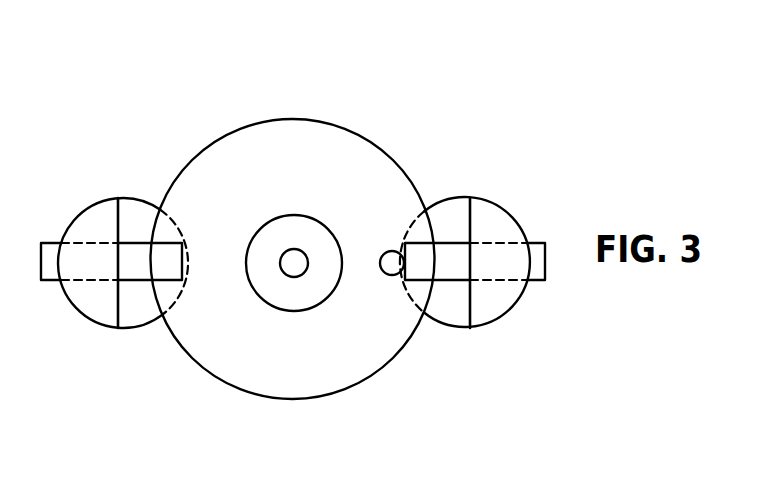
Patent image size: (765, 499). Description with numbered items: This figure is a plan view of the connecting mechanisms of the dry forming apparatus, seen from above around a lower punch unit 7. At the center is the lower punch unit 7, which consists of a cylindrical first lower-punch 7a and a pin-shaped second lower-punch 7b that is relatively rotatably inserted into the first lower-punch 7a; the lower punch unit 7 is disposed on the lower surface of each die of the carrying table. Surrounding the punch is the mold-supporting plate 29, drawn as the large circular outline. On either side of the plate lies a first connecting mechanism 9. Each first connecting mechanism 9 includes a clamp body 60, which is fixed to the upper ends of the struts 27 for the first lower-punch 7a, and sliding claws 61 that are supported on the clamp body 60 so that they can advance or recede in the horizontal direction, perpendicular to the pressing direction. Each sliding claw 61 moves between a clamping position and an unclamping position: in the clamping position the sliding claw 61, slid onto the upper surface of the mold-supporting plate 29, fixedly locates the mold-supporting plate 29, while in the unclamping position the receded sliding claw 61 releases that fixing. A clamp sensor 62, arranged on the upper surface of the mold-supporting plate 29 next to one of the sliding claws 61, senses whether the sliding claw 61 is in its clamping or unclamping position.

The lower punch unit 7 is at (290, 159).
The first lower-punch 7a is at (278, 216).
The second lower-punch 7b is at (297, 249).
The mold-supporting plate 29 is at (365, 137).
The struts 27 is at (138, 198).
The clamp body 60 is at (118, 328).
The sliding claws 61 is at (143, 282).
The clamp sensor 62 is at (384, 274).
The first connecting mechanism 9 is at (293, 337).